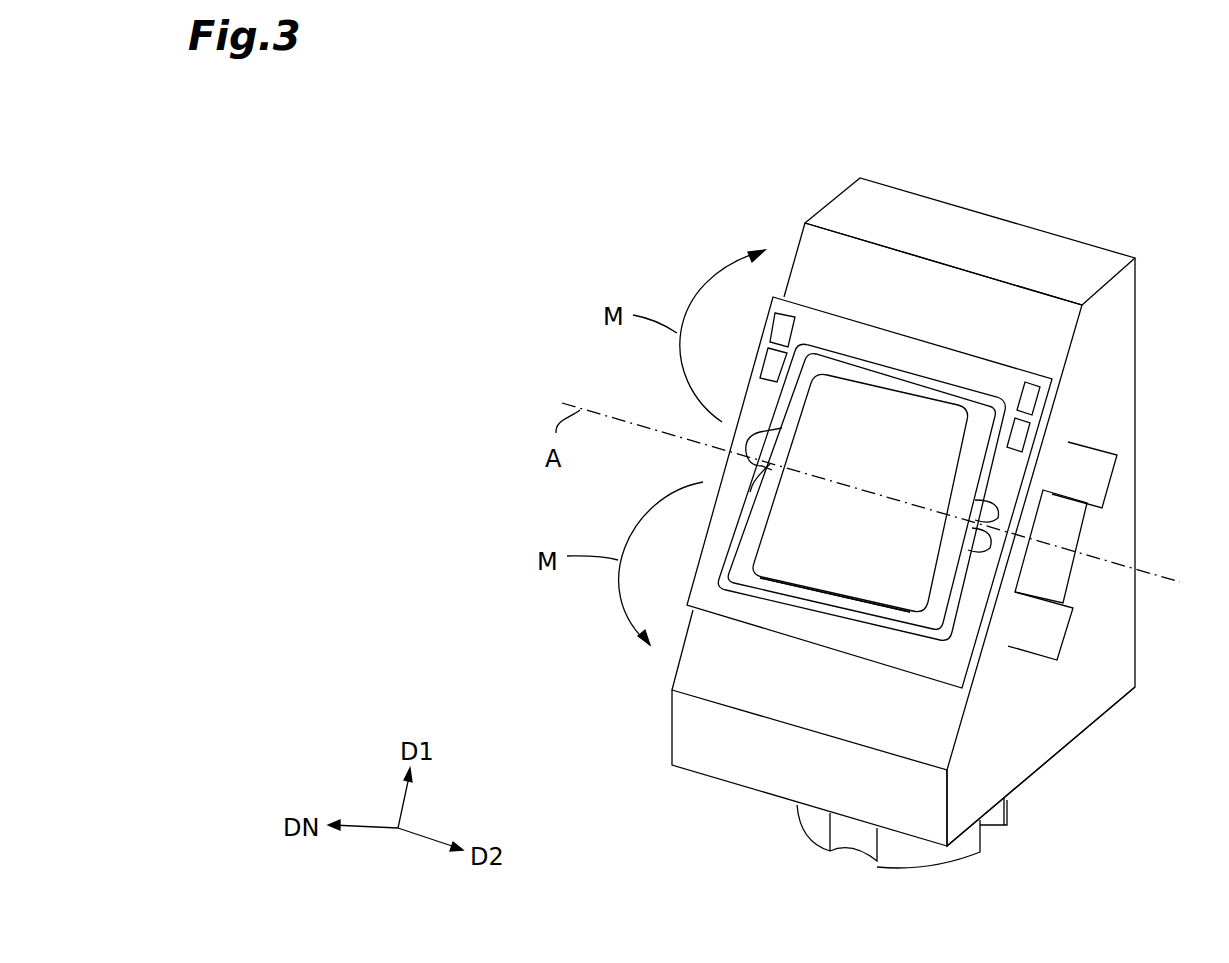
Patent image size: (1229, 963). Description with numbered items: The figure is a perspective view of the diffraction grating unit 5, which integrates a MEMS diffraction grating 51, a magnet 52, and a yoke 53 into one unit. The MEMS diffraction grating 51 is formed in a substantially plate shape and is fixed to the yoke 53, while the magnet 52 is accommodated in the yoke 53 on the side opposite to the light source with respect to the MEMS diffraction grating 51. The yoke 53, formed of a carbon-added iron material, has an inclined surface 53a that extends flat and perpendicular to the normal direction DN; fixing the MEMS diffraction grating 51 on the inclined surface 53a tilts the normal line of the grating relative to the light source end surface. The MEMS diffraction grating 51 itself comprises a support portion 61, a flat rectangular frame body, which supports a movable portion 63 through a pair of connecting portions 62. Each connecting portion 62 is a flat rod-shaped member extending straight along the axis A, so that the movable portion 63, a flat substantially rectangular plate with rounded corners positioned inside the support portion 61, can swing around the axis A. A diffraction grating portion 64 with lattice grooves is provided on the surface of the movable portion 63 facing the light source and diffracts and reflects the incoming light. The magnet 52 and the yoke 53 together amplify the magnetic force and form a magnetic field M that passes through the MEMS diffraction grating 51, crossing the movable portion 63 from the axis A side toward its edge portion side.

The diffraction grating unit 5 is at (1173, 157).
The MEMS diffraction grating 51 is at (817, 327).
The magnet 52 is at (972, 460).
The yoke 53 is at (1023, 253).
The inclined surface 53a is at (905, 717).
The support portion 61 is at (888, 345).
The connecting portions 62 is at (753, 470).
The movable portion 63 is at (798, 572).
The diffraction grating portion 64 is at (835, 595).